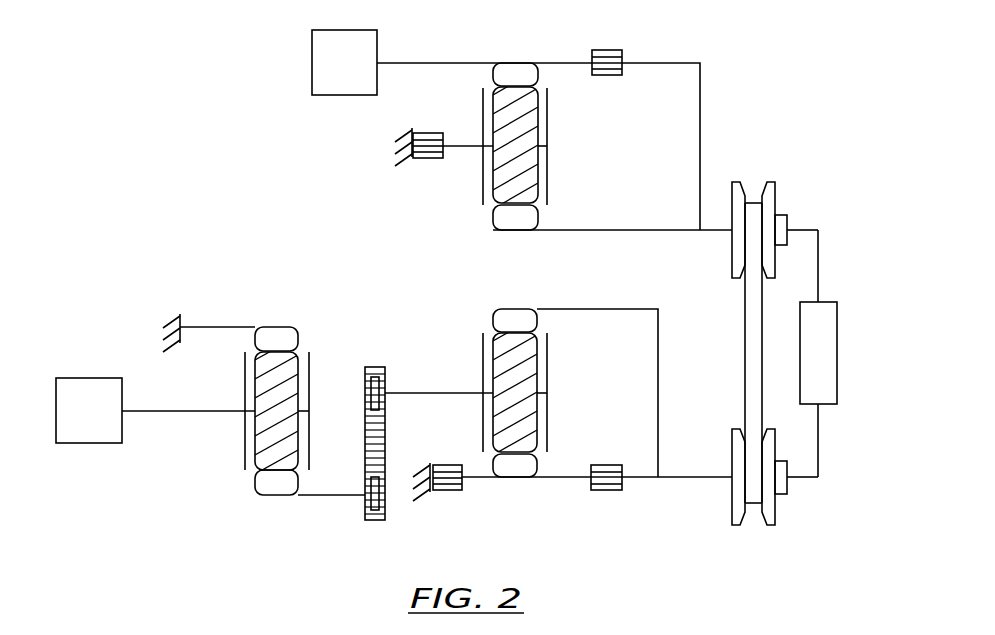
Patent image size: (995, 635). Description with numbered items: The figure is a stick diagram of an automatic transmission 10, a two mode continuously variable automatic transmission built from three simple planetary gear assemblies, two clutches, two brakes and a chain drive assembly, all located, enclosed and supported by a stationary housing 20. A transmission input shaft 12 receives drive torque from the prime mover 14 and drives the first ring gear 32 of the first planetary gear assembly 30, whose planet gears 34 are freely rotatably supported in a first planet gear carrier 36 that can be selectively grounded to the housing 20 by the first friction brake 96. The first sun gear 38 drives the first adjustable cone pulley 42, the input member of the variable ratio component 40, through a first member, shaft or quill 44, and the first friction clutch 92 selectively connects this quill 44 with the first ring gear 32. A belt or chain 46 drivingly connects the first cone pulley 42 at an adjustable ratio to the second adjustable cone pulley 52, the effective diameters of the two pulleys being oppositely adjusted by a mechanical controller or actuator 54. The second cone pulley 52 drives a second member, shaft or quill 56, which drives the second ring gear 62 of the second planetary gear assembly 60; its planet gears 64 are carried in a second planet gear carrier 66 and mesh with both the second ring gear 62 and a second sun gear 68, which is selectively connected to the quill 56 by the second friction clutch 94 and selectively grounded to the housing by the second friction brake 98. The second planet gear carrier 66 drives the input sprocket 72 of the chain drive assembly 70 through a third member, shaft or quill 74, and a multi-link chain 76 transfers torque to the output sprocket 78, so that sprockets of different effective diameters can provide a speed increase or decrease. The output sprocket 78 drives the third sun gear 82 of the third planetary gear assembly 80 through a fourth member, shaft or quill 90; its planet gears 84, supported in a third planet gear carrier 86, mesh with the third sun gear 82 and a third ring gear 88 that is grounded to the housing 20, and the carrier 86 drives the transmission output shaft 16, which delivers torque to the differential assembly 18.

The automatic transmission 10 is at (203, 134).
The transmission input shaft 12 is at (415, 63).
The prime mover 14 is at (333, 68).
The transmission output shaft 16 is at (157, 414).
The differential assembly 18 is at (83, 402).
The housing 20 is at (405, 135).
The first planetary gear assembly 30 is at (535, 146).
The first ring gear 32 is at (514, 72).
The planet gears 34 is at (507, 185).
The first planet gear carrier 36 is at (548, 113).
The first sun gear 38 is at (513, 220).
The variable ratio component 40 is at (754, 344).
The first adjustable cone pulley 42 is at (772, 183).
The first member, shaft or quill 44 is at (670, 231).
The belt or chain 46 is at (755, 357).
The second adjustable cone pulley 52 is at (738, 526).
The mechanical controller or actuator 54 is at (823, 338).
The second member, shaft or quill 56 is at (659, 447).
The second planetary gear assembly 60 is at (525, 393).
The second ring gear 62 is at (517, 318).
The planet gears 64 is at (510, 403).
The second planet gear carrier 66 is at (482, 342).
The second sun gear 68 is at (513, 468).
The chain drive assembly 70 is at (378, 490).
The input sprocket 72 is at (370, 400).
The third member, shaft or quill 74 is at (415, 392).
The multi-link chain 76 is at (378, 450).
The output sprocket 78 is at (368, 507).
The third planetary gear assembly 80 is at (280, 386).
The third sun gear 82 is at (270, 480).
The planet gears 84 is at (270, 445).
The third planet gear carrier 86 is at (312, 365).
The third ring gear 88 is at (273, 337).
The fourth member, shaft or quill 90 is at (312, 497).
The first friction clutch 92 is at (608, 50).
The second friction clutch 94 is at (607, 492).
The first friction brake 96 is at (433, 160).
The second friction brake 98 is at (447, 492).